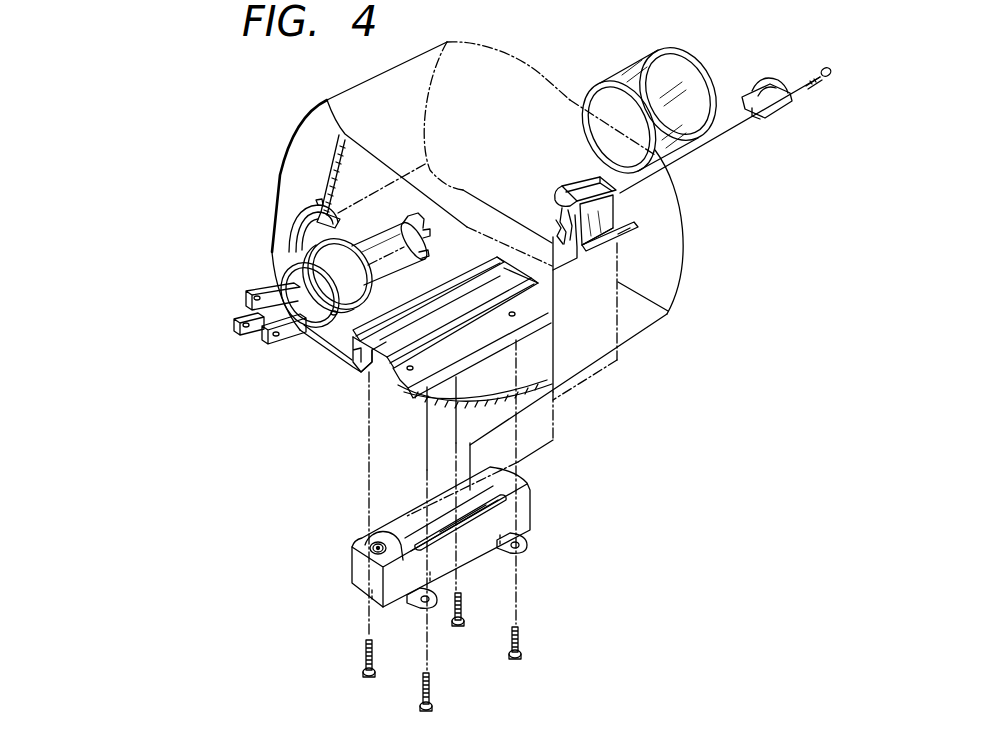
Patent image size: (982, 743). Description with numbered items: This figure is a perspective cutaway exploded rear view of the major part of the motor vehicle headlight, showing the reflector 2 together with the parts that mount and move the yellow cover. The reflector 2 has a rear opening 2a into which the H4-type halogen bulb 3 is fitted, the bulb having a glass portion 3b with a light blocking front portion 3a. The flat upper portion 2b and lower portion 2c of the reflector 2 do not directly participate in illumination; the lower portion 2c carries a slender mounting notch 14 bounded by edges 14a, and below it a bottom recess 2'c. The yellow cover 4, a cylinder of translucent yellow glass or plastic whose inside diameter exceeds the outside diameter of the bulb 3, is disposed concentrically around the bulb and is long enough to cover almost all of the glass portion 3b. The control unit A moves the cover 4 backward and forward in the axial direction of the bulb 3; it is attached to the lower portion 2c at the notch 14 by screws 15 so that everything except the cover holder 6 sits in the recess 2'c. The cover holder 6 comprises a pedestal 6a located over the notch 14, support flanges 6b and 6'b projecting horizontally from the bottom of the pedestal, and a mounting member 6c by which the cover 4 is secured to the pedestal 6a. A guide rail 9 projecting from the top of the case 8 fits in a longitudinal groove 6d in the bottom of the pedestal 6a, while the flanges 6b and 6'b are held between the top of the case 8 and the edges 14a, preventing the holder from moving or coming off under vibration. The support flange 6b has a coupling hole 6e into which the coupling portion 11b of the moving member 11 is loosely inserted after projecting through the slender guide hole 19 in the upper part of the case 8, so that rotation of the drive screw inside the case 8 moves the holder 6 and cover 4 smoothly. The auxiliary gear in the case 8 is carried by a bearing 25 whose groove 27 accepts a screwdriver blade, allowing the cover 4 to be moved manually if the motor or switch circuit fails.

The reflector 2 is at (452, 350).
The rear opening 2a is at (302, 242).
The upper portion 2b is at (511, 72).
The lower portion 2c is at (461, 192).
The bottom recess 2'c is at (343, 370).
The halogen bulb 3 is at (335, 316).
The light blocking front portion 3a is at (425, 243).
The glass portion 3b is at (368, 247).
The yellow cover 4 is at (617, 72).
The cover holder 6 is at (584, 224).
The pedestal 6a is at (581, 186).
The support flange 6'b is at (535, 214).
The support flange 6b is at (600, 250).
The mounting member 6c is at (748, 90).
The groove 6d is at (571, 242).
The coupling hole 6e is at (624, 234).
The case 8 is at (524, 507).
The guide rail 9 is at (451, 503).
The moving member 11 is at (413, 652).
The coupling portion 11b is at (477, 575).
The slender mounting notch 14 is at (430, 310).
The edges 14a is at (469, 270).
The screws 15 is at (521, 637).
The slender guide hole 19 is at (510, 489).
The bearing 25 is at (378, 548).
The groove 27 is at (373, 553).
The control unit A is at (343, 568).